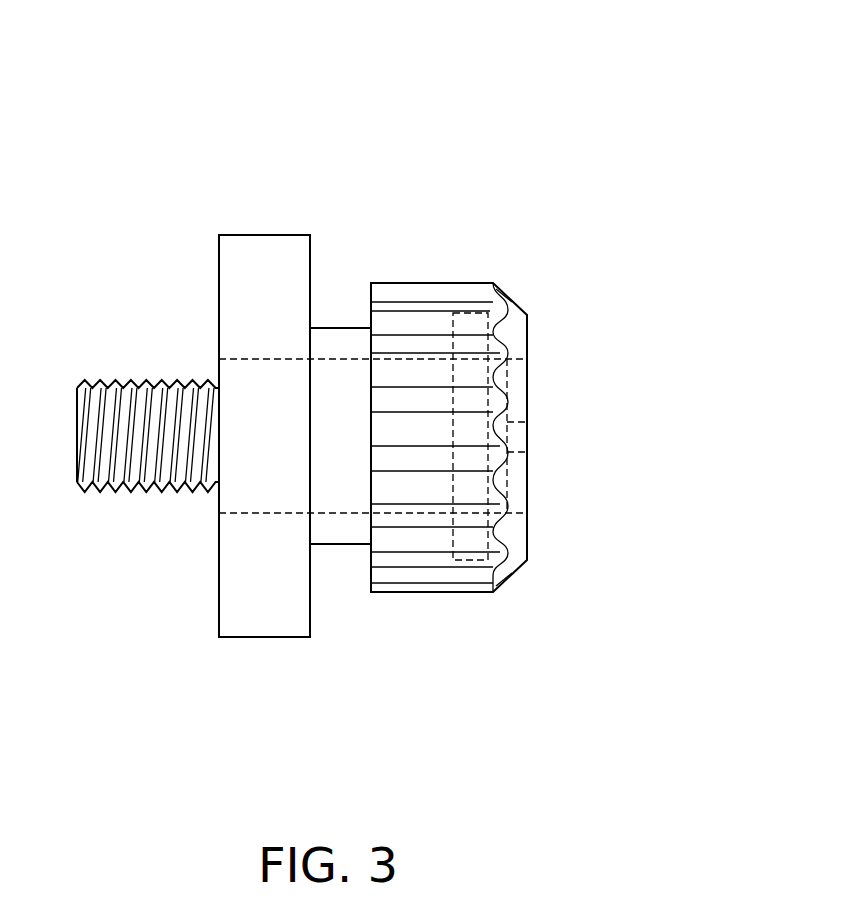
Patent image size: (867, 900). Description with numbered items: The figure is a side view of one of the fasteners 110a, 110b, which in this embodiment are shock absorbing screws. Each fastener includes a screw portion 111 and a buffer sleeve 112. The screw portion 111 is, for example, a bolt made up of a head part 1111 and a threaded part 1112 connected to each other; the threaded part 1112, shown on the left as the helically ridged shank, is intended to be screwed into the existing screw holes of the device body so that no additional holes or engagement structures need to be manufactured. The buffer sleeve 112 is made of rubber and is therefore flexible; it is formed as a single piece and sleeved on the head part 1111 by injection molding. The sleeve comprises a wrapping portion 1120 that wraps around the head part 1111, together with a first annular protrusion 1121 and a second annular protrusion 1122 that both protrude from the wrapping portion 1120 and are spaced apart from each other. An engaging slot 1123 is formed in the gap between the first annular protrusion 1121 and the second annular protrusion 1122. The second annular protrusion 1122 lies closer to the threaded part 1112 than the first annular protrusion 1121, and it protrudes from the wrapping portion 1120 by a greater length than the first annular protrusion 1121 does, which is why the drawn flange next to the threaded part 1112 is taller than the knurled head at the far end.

The fastener 110a is at (309, 375).
The fastener 110b is at (302, 425).
The screw portion 111 is at (302, 525).
The head part 1111 is at (373, 504).
The threaded part 1112 is at (150, 475).
The buffer sleeve 112 is at (372, 375).
The wrapping portion 1120 is at (343, 328).
The first annular protrusion 1121 is at (449, 376).
The second annular protrusion 1122 is at (263, 235).
The engaging slot 1123 is at (373, 352).